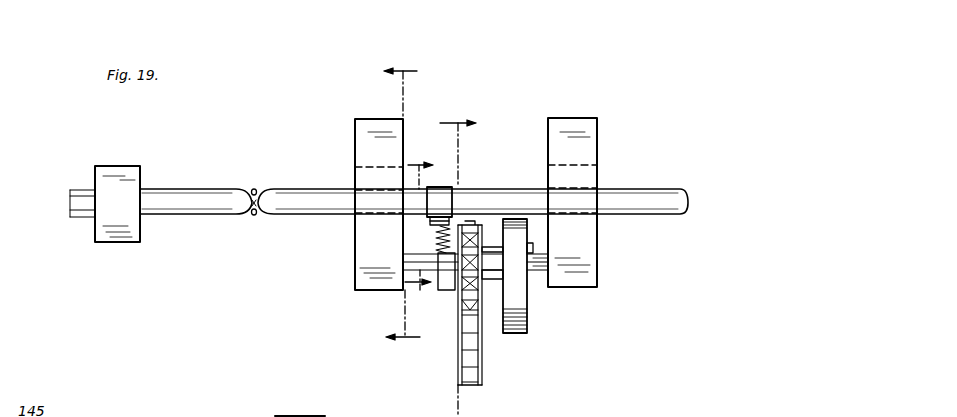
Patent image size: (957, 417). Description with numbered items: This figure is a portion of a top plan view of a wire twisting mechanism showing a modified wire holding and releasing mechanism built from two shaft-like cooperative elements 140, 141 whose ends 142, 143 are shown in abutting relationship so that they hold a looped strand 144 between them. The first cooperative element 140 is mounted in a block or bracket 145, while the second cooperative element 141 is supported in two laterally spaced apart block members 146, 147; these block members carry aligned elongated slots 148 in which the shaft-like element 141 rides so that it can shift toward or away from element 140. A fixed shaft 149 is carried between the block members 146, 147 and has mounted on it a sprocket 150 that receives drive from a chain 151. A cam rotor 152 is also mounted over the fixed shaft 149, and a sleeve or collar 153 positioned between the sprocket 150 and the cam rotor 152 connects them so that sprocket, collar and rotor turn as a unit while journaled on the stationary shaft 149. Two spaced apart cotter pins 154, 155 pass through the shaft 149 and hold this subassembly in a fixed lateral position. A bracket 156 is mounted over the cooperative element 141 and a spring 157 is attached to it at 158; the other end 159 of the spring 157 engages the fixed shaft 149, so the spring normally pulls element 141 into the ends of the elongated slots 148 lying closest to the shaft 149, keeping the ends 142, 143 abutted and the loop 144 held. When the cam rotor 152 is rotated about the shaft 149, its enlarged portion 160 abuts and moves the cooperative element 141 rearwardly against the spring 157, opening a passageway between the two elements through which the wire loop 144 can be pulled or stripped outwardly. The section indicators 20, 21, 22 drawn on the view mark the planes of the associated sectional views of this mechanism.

The section line 20 is at (458, 258).
The section line 21 is at (419, 224).
The section line 22 is at (402, 208).
The first cooperative element 140 is at (176, 191).
The second cooperative element 141 is at (320, 215).
The end of cooperative element 142 is at (255, 216).
The end of cooperative element 143 is at (255, 190).
The looped strand 144 is at (251, 214).
The block or bracket 145 is at (105, 170).
The block member 146 is at (361, 119).
The block member 147 is at (575, 125).
The elongated slot 148 is at (353, 176).
The fixed shaft 149 is at (540, 270).
The sprocket 150 is at (478, 224).
The chain 151 is at (482, 380).
The cam rotor 152 is at (531, 309).
The sleeve or collar 153 is at (495, 280).
The cotter pin 154 is at (440, 252).
The cotter pin 155 is at (532, 250).
The bracket 156 is at (447, 188).
The spring 157 is at (437, 232).
The spring attachment point 158 is at (452, 222).
The other end of spring 159 is at (444, 275).
The enlarged portion of cam rotor 160 is at (515, 333).